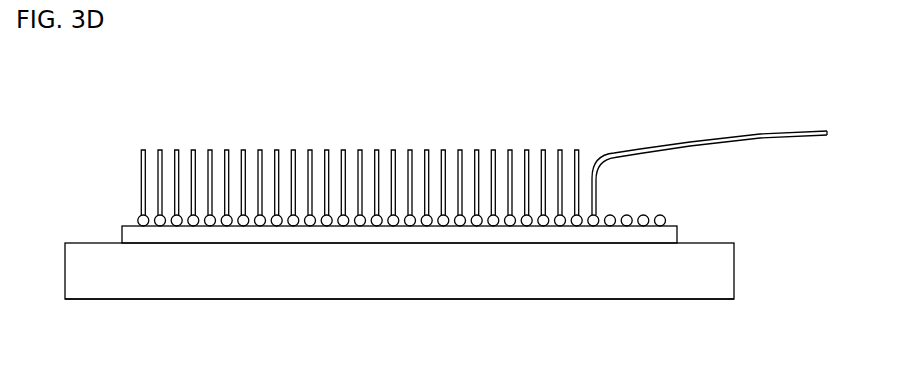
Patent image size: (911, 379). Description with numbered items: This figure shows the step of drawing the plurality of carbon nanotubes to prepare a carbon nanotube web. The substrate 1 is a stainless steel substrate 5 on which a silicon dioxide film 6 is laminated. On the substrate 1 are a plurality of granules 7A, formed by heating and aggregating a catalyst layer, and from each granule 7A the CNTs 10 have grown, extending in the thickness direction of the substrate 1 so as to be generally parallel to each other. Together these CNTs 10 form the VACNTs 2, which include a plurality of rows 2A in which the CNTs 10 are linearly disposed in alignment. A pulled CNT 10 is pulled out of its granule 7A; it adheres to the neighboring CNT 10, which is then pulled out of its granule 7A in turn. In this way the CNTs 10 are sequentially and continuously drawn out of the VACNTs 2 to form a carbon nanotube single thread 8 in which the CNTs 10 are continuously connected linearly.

The substrate 1 is at (735, 270).
The VACNTs 2 is at (180, 136).
The rows 2A is at (393, 150).
The stainless steel substrate 5 is at (665, 299).
The silicon dioxide film 6 is at (128, 227).
The granules 7A is at (343, 226).
The carbon nanotube single thread 8 is at (745, 127).
The CNTs 10 is at (211, 168).